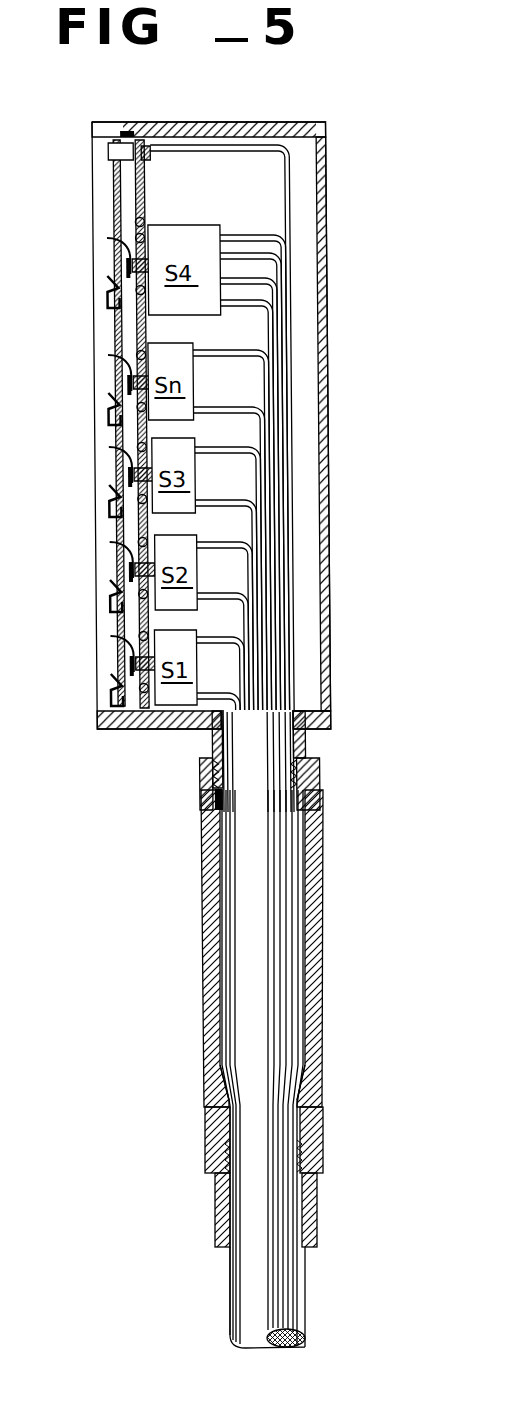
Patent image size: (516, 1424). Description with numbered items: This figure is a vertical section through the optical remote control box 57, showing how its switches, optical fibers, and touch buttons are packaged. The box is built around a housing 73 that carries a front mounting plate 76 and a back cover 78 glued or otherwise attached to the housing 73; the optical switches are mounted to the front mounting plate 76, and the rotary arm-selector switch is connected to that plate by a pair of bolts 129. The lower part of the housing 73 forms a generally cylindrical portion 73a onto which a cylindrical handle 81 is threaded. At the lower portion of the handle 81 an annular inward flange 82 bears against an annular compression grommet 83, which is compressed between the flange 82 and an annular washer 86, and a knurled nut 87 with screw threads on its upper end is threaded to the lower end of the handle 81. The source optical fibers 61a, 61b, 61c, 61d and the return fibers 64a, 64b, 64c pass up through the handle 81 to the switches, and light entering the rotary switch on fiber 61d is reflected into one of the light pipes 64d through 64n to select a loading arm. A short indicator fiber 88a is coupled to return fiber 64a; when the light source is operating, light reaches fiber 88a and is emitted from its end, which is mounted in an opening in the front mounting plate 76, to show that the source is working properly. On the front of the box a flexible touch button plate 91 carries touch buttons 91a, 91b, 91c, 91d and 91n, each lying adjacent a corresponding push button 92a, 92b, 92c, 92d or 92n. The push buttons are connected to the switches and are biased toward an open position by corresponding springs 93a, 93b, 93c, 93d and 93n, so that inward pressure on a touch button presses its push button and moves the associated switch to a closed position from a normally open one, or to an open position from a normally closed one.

The remote control box 57 is at (279, 115).
The housing 73 is at (163, 122).
The generally cylindrical portion 73a is at (304, 748).
The back cover 78 is at (320, 332).
The front mounting plate 76 is at (144, 192).
The flexible touch button plate 91 is at (113, 178).
The bolts 129 is at (143, 222).
The short indicator fiber 88a is at (227, 157).
The spring 93d is at (118, 239).
The push button 92d is at (125, 265).
The touch button 91d is at (113, 288).
The spring 93n is at (118, 354).
The push button 92n is at (125, 381).
The touch button 91n is at (114, 402).
The spring 93c is at (118, 450).
The push button 92c is at (125, 477).
The touch button 91c is at (114, 494).
The spring 93b is at (118, 546).
The push button 92b is at (125, 572).
The touch button 91b is at (114, 590).
The spring 93a is at (118, 640).
The push button 92a is at (125, 666).
The touch button 91a is at (114, 684).
The light pipe 64d is at (283, 250).
The optical fiber 61d is at (275, 274).
The light pipe 64n is at (246, 308).
The return fiber 64c is at (259, 471).
The optical fiber 61c is at (250, 496).
The return fiber 64b is at (244, 565).
The optical fiber 61b is at (243, 592).
The return fiber 64a is at (234, 657).
The optical fiber 61a is at (206, 722).
The cylindrical handle 81 is at (203, 917).
The annular inward flange 82 is at (229, 1103).
The annular compression grommet 83 is at (222, 1120).
The annular washer 86 is at (223, 1142).
The knurled nut 87 is at (217, 1207).